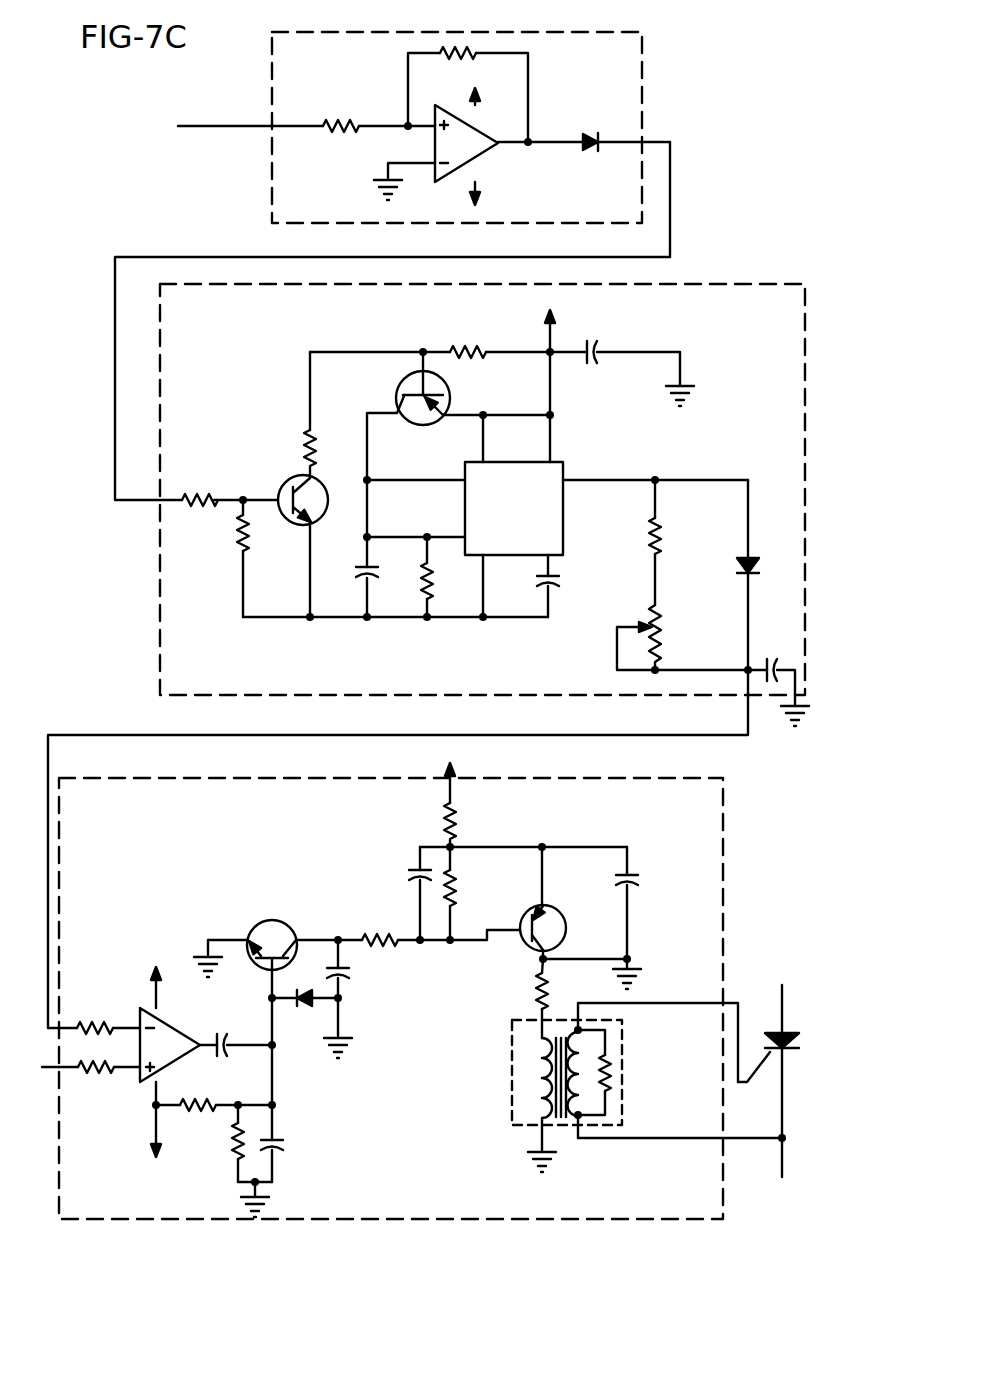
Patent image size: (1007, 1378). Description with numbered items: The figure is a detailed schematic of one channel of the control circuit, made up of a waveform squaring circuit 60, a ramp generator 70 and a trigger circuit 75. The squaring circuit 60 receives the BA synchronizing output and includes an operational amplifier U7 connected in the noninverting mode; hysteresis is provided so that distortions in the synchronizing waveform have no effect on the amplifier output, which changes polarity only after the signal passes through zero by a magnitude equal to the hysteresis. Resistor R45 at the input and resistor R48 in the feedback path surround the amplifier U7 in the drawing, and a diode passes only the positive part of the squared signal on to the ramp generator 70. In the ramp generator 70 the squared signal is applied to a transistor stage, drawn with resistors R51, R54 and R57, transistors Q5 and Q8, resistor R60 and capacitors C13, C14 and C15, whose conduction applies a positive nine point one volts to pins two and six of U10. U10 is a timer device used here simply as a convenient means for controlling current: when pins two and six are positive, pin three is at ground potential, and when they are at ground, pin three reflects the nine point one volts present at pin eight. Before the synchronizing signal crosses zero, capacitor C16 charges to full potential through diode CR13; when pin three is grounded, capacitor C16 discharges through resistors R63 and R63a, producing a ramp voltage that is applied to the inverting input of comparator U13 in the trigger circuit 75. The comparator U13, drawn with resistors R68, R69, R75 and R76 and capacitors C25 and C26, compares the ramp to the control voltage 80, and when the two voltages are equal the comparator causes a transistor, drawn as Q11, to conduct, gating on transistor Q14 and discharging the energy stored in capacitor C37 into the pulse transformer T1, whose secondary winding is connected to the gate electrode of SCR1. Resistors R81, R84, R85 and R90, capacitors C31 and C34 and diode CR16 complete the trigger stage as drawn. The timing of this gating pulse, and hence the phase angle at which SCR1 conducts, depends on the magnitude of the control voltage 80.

The waveform squaring circuit 60 is at (628, 58).
The ramp generator 70 is at (752, 293).
The trigger circuit 75 is at (717, 818).
The control voltage 80 is at (44, 1069).
The resistor R45 is at (341, 114).
The feedback resistor R48 is at (468, 94).
The operational amplifier U7 is at (448, 150).
The resistor R51 is at (199, 490).
The resistor R54 is at (219, 558).
The resistor R57 is at (285, 415).
The transistor Q5 is at (284, 521).
The transistor Q8 is at (399, 383).
The resistor R60 is at (469, 341).
The capacitor C15 is at (622, 357).
The NE555 timing device U10 is at (513, 511).
The capacitor C13 is at (341, 575).
The capacitor C14 is at (566, 586).
The resistor R63 is at (664, 538).
The resistor R63a is at (664, 634).
The diode CR13 is at (715, 575).
The capacitor C16 is at (778, 680).
The resistor R84 is at (471, 821).
The resistor R85 is at (469, 893).
The capacitor C34 is at (393, 893).
The resistor R81 is at (429, 927).
The transistor Q14 is at (559, 917).
The capacitor C37 is at (647, 903).
The resistor R90 is at (513, 998).
The pulse transformer T1 is at (548, 1096).
The SCR SCR1 is at (769, 1073).
The transistor Q11 is at (264, 924).
The capacitor C31 is at (356, 969).
The diode CR16 is at (310, 1024).
The comparator U13 is at (153, 1063).
The resistor R68 is at (108, 1018).
The resistor R69 is at (109, 1081).
The capacitor C25 is at (236, 1031).
The resistor R75 is at (214, 1117).
The resistor R76 is at (227, 1143).
The capacitor C26 is at (292, 1159).